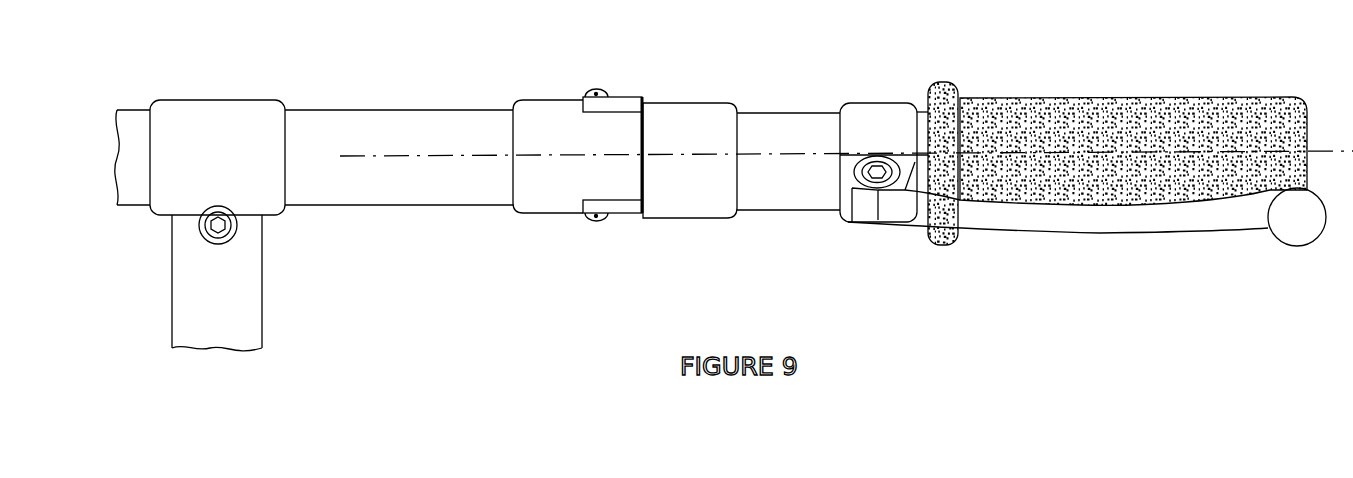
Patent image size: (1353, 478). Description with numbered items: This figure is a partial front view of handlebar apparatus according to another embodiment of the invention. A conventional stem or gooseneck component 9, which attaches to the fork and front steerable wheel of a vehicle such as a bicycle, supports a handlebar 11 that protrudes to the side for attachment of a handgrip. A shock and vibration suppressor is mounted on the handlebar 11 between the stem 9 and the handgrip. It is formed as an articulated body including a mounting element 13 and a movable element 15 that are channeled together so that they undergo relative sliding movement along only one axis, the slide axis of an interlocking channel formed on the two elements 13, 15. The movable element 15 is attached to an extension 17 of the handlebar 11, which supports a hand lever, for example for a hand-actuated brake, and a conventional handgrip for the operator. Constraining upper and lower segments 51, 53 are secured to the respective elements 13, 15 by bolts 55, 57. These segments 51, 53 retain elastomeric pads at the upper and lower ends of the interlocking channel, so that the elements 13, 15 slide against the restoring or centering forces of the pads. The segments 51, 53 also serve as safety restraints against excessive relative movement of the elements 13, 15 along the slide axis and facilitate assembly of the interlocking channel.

The stem component 9 is at (222, 105).
The handlebar 11 is at (140, 115).
The mounting element 13 is at (537, 105).
The movable element 15 is at (698, 110).
The extension 17 is at (805, 118).
The upper segment 51 is at (634, 101).
The lower segment 53 is at (625, 212).
The bolt 55 is at (597, 91).
The bolt 57 is at (592, 218).